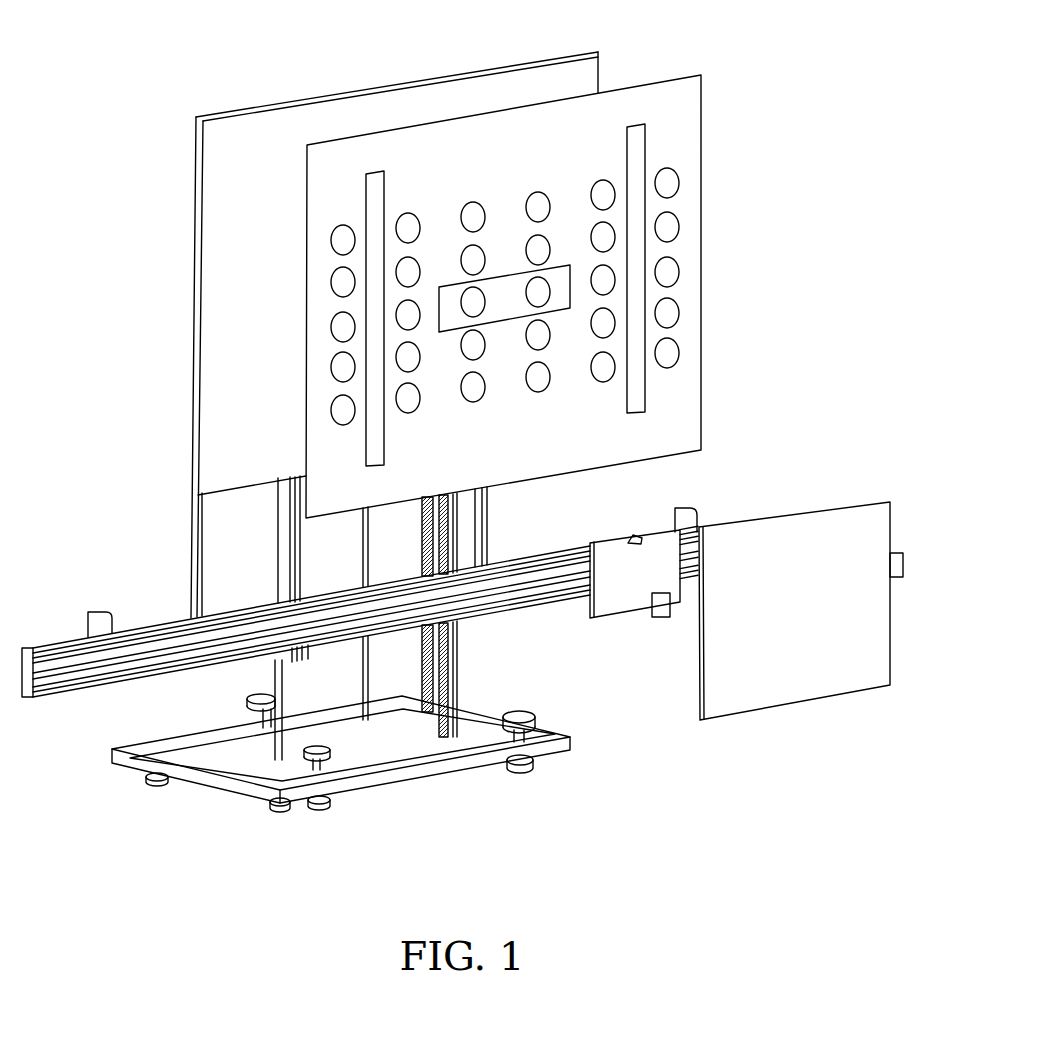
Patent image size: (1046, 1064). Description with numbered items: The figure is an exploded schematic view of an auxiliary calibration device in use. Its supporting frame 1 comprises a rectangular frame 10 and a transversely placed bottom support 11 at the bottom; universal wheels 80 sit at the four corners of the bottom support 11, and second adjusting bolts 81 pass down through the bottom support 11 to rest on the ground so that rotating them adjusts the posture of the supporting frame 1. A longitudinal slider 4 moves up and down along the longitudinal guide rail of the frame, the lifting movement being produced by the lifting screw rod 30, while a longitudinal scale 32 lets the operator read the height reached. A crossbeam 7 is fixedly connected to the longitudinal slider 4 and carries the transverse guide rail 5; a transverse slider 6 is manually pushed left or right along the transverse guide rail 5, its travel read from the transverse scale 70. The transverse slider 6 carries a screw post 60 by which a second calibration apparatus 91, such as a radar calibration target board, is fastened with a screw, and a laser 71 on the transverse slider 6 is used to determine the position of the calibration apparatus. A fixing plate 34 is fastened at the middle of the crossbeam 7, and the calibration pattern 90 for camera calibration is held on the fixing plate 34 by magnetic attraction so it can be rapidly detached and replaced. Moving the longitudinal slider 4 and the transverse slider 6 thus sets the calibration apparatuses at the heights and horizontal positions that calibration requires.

The supporting frame 1 is at (145, 843).
The longitudinal slider 4 is at (477, 560).
The transverse guide rail 5 is at (153, 673).
The transverse slider 6 is at (650, 558).
The crossbeam 7 is at (597, 537).
The rectangular frame 10 is at (280, 707).
The bottom support 11 is at (245, 785).
The lifting screw rod 30 is at (365, 668).
The longitudinal scale 32 is at (450, 683).
The fixing plate 34 is at (563, 82).
The screw post 60 is at (636, 595).
The transverse scale 70 is at (98, 620).
The laser 71 is at (660, 613).
The universal wheel 80 is at (152, 782).
The second adjusting bolt 81 is at (277, 803).
The calibration pattern 90 is at (677, 157).
The second calibration apparatus 91 is at (825, 548).